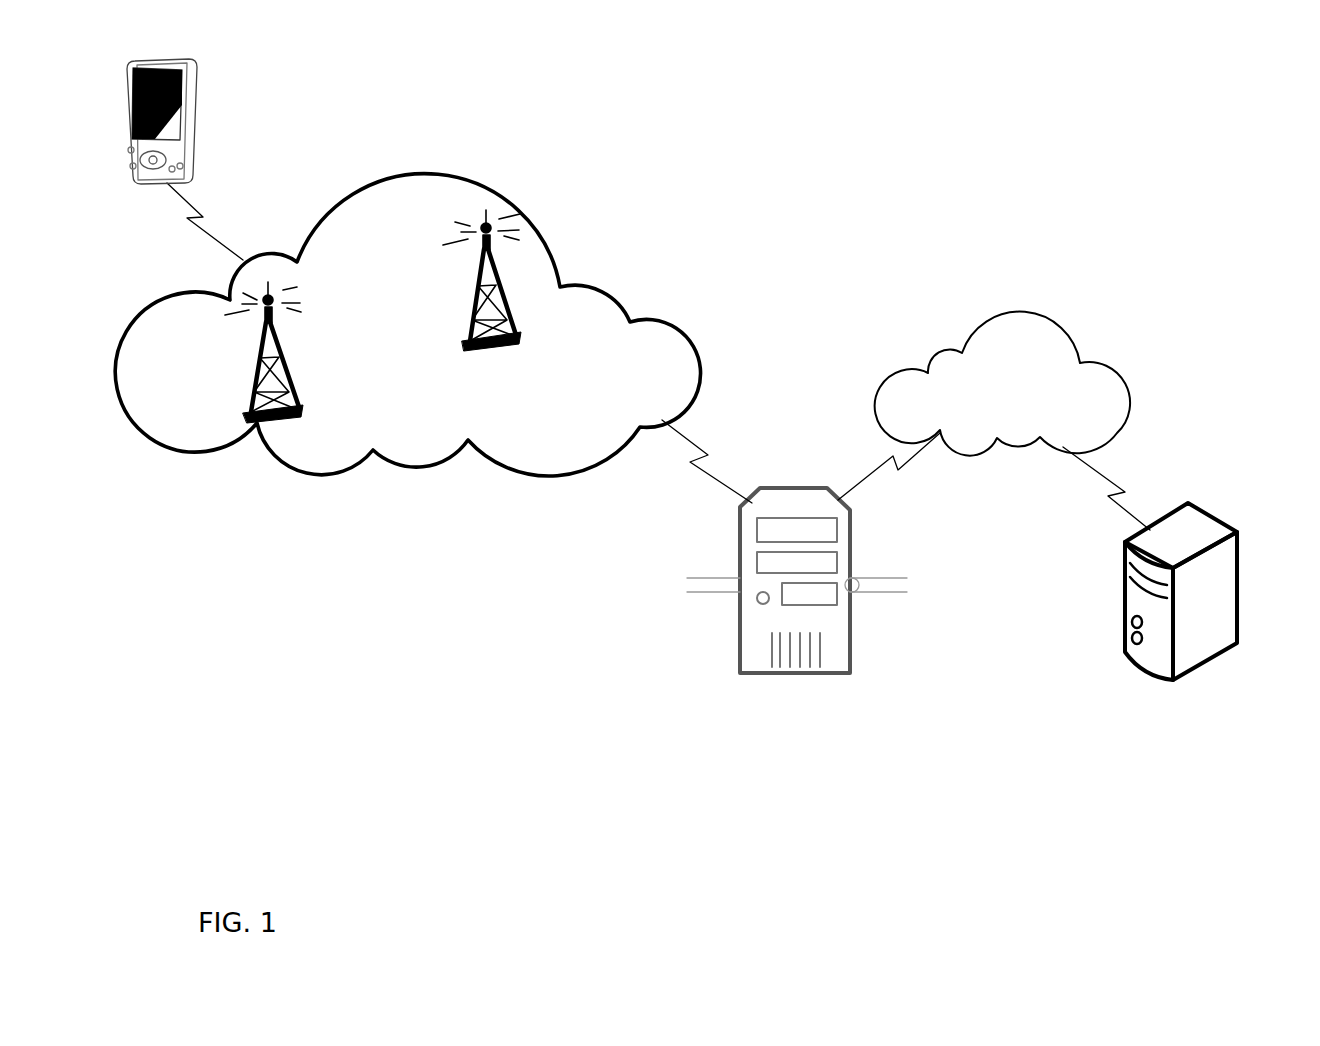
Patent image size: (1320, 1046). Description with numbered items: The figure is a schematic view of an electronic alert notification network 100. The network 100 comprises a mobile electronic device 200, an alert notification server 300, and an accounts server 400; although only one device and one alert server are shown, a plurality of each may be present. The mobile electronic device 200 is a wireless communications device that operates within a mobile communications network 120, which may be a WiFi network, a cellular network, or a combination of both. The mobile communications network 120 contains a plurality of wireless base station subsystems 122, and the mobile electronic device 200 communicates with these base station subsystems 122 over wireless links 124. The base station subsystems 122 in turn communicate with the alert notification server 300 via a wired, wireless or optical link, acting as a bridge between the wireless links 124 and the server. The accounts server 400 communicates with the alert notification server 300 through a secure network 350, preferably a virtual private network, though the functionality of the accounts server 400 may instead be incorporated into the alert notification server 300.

The electronic alert notification network 100 is at (665, 839).
The mobile communications network 120 is at (582, 471).
The wireless base station subsystem 122 is at (280, 338).
The wireless link 124 is at (217, 245).
The mobile electronic device 200 is at (199, 93).
The alert notification server 300 is at (745, 635).
The secure network 350 is at (1080, 352).
The accounts server 400 is at (1212, 530).